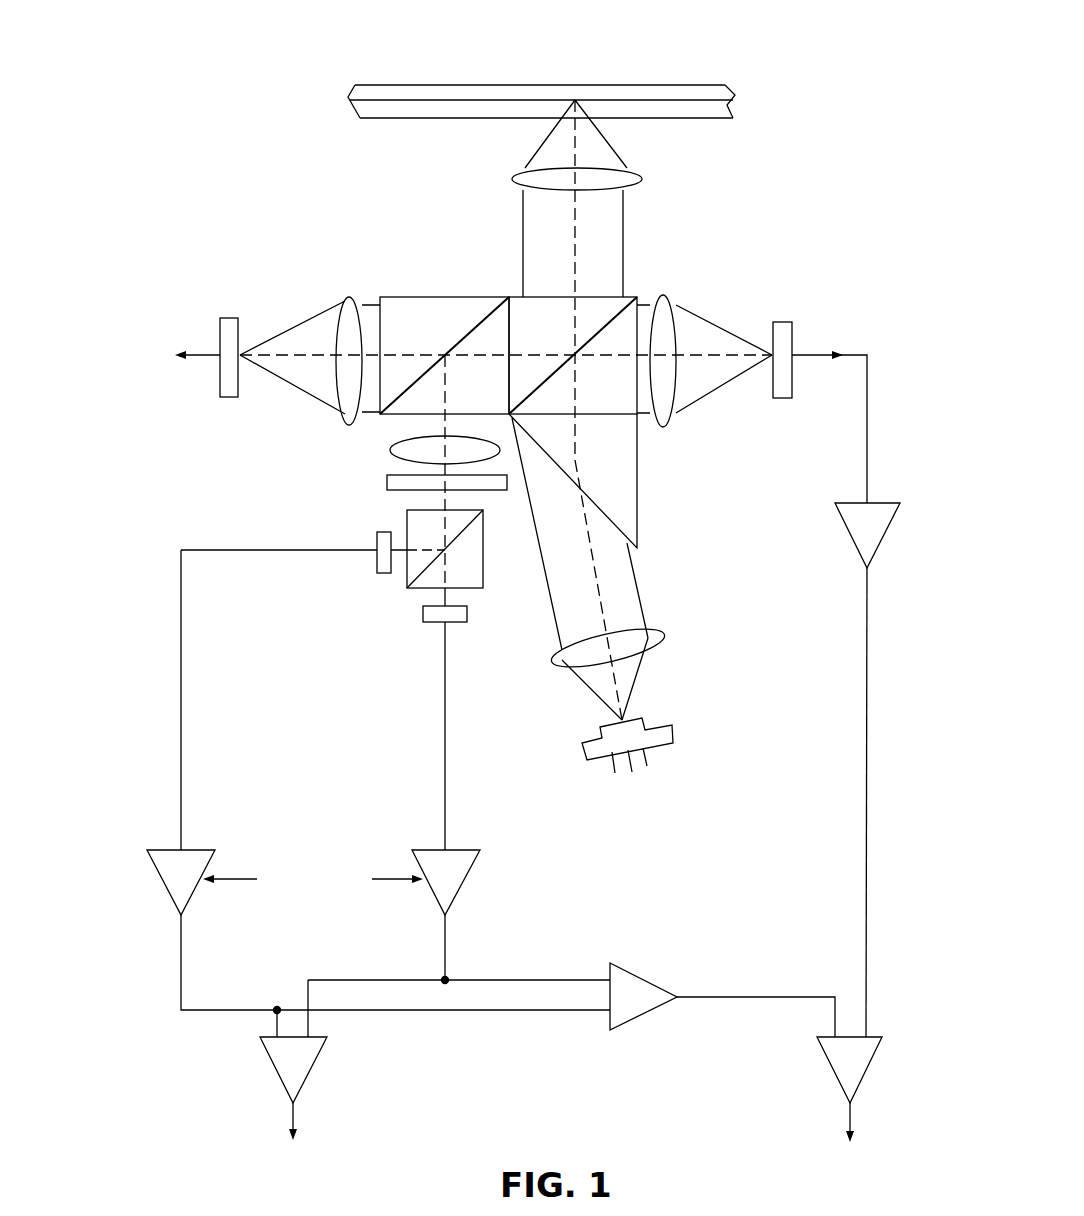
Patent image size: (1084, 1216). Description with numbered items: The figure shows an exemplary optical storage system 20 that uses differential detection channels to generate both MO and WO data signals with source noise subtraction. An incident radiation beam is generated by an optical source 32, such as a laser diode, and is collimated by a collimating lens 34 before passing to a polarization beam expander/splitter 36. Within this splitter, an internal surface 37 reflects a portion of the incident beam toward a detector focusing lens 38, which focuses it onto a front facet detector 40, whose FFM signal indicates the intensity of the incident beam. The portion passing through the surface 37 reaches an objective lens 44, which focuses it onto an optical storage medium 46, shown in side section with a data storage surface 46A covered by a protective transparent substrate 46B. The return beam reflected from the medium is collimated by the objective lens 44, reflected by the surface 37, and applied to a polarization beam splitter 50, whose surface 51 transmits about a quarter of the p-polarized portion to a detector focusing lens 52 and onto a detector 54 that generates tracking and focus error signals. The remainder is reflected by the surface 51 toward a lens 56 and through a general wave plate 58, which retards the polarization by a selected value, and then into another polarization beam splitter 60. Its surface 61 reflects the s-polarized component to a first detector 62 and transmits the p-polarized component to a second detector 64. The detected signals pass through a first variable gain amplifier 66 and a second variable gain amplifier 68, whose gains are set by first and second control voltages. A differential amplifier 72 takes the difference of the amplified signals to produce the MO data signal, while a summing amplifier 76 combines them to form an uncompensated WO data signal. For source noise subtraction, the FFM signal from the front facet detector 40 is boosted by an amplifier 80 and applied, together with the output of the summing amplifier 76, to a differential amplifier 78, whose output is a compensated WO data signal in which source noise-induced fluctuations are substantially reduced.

The optical storage system 20 is at (224, 197).
The optical storage medium 46 is at (723, 66).
The data storage surface 46A is at (407, 93).
The transparent substrate 46B is at (452, 112).
The objective lens 44 is at (512, 178).
The polarization beam splitter 50 is at (403, 297).
The surface 51 is at (463, 345).
The polarization beam expander/splitter 36 is at (582, 297).
The internal surface 37 is at (523, 406).
The detector focusing lens 52 is at (350, 297).
The detector 54 is at (218, 382).
The detector focusing lens 38 is at (664, 297).
The front facet detector 40 is at (793, 383).
The amplifier 80 is at (843, 527).
The lens 56 is at (390, 450).
The general wave plate 58 is at (387, 482).
The polarization beam splitter 60 is at (407, 523).
The surface 61 is at (468, 530).
The first detector 62 is at (383, 575).
The second detector 64 is at (465, 609).
The collimating lens 34 is at (665, 635).
The optical source 32 is at (673, 733).
The first variable gain amplifier 66 is at (158, 877).
The second variable gain amplifier 68 is at (462, 895).
The differential amplifier 72 is at (270, 1063).
The summing amplifier 76 is at (647, 982).
The differential amplifier 78 is at (828, 1063).